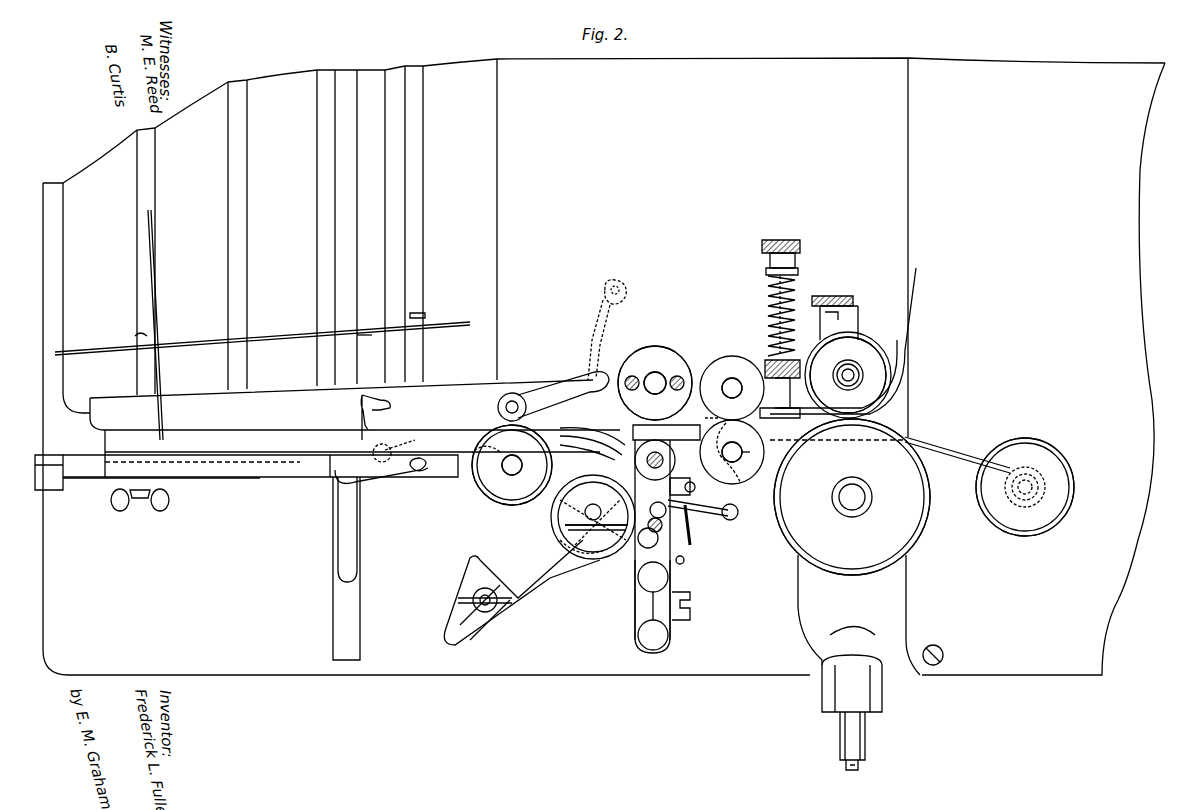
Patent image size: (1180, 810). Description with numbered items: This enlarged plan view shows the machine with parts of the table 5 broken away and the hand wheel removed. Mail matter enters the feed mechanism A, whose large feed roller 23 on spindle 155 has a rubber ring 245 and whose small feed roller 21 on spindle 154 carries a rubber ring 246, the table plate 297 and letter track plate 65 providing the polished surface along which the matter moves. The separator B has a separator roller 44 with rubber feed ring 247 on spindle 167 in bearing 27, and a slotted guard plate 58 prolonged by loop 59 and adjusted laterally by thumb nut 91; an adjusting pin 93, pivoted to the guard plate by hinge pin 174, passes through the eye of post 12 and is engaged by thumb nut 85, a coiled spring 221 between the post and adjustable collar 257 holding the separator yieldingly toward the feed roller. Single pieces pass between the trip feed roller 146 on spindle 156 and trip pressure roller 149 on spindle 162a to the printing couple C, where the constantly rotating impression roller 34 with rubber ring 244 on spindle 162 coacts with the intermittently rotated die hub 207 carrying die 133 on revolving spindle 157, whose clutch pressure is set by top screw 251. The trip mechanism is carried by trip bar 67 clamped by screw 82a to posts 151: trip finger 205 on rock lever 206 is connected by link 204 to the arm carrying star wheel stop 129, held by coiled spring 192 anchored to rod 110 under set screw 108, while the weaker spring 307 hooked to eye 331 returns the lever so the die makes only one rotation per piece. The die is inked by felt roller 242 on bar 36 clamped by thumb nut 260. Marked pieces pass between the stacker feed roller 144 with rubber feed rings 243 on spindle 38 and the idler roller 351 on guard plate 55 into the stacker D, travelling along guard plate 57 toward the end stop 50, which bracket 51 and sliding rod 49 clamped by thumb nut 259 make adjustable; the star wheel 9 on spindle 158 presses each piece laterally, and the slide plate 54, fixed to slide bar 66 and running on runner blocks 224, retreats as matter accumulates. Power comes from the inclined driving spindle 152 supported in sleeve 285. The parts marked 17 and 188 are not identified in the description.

The machine table 5 is at (688, 203).
The stacker star wheel 9 is at (363, 400).
The post 12 is at (798, 271).
The rod 17 is at (950, 450).
The small feed roller 21 is at (1025, 487).
The large feed roller 23 is at (852, 497).
The separator spindle bearing 27 is at (860, 315).
The impression roller 34 is at (655, 383).
The felt roller bar 36 is at (563, 565).
The spindle 38 is at (512, 465).
The separator roller 44 is at (848, 375).
The sliding rod 49 is at (280, 455).
The end stop 50 is at (162, 380).
The bracket 51 is at (195, 470).
The stacker slide plate 54 is at (274, 340).
The guard plate 55 is at (580, 395).
The stacker guard plate 57 is at (303, 432).
The separator guard plate 58 is at (905, 390).
The loop 59 is at (912, 322).
The letter track plate 65 is at (538, 380).
The slide bar 66 is at (362, 340).
The trip bar 67 is at (635, 600).
The screw 82a is at (690, 604).
The thumb nut 85 is at (781, 244).
The thumb nut 91 is at (833, 295).
The adjusting pin 93 is at (768, 320).
The set screw 108 is at (662, 553).
The adjustable rod 110 is at (562, 530).
The star wheel stop 129 is at (640, 488).
The die 133 is at (587, 453).
The stacker feed roller 144 is at (512, 455).
The trip feed roller 146 is at (732, 452).
The trip pressure roller 149 is at (735, 400).
The fixed posts 151 is at (655, 606).
The driving spindle 152 is at (865, 738).
The spindle 154 is at (1018, 495).
The spindle 155 is at (860, 500).
The spindle 156 is at (745, 469).
The die spindle 157 is at (665, 462).
The spindle 158 is at (410, 445).
The spindle 162 is at (655, 372).
The spindle 162a is at (727, 380).
The separator spindle 167 is at (858, 370).
The hinge pin 174 is at (790, 420).
The gear 188 is at (594, 506).
The coiled spring 192 is at (595, 552).
The link 204 is at (712, 520).
The trip finger 205 is at (702, 415).
The rock lever 206 is at (682, 485).
The die hub 207 is at (592, 441).
The coiled spring 221 is at (766, 298).
The runner blocks 224 is at (135, 337).
The inked felt roller 242 is at (548, 505).
The rubber feed rings 243 is at (478, 500).
The rubber ring 244 is at (685, 358).
The rubber ring 245 is at (795, 530).
The rubber ring 246 is at (1000, 535).
The rubber feed ring 247 is at (815, 352).
The pressure adjusting top screw 251 is at (666, 432).
The adjustable collar 257 is at (762, 355).
The thumb nut 259 is at (165, 505).
The thumb nut 260 is at (505, 605).
The sleeve 285 is at (882, 695).
The table plate 297 is at (1099, 359).
The coiled spring 307 is at (690, 540).
The eye 331 is at (684, 562).
The stacker idler roller 351 is at (497, 402).
The feed mechanism A is at (953, 430).
The separator B is at (878, 328).
The printing couple C is at (609, 420).
The stacker D is at (416, 403).